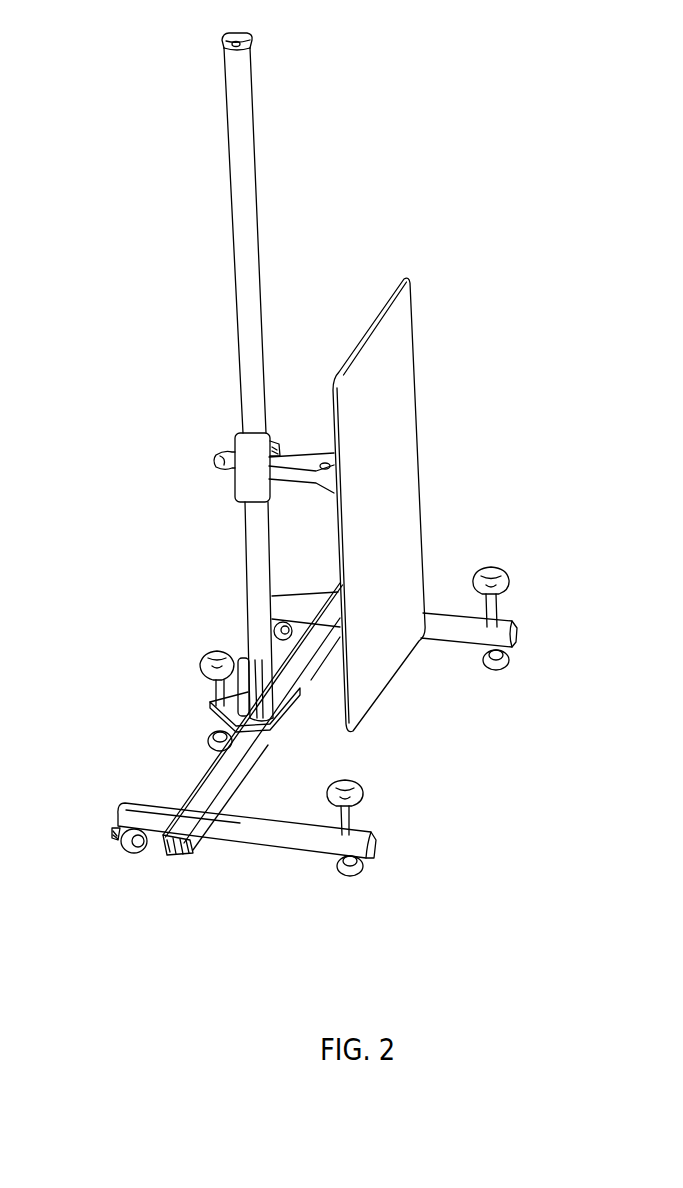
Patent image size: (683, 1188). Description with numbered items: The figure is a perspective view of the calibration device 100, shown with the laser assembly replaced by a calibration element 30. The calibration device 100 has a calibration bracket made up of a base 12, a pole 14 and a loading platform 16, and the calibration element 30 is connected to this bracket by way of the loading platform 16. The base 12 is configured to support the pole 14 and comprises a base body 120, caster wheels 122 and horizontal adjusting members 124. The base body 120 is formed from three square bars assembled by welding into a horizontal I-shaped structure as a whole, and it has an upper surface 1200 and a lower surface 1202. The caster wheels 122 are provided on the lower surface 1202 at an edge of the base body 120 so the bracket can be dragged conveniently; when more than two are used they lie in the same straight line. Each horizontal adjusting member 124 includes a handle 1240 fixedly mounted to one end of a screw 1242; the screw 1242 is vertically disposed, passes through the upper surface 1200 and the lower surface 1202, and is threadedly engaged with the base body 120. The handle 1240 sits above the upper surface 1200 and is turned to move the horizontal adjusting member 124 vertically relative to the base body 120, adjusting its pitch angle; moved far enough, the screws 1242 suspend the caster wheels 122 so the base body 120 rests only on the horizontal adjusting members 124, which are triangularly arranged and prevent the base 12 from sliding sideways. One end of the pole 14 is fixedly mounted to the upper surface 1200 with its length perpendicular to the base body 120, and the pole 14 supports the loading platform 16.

The calibration device 100 is at (476, 70).
The base 12 is at (390, 936).
The pole 14 is at (245, 285).
The loading platform 16 is at (235, 451).
The calibration element 30 is at (401, 396).
The base body 120 is at (225, 830).
The caster wheels 122 is at (138, 828).
The horizontal adjusting member 124 is at (368, 833).
The upper surface 1200 is at (215, 765).
The lower surface 1202 is at (118, 832).
The handle 1240 is at (513, 574).
The screw 1242 is at (499, 620).